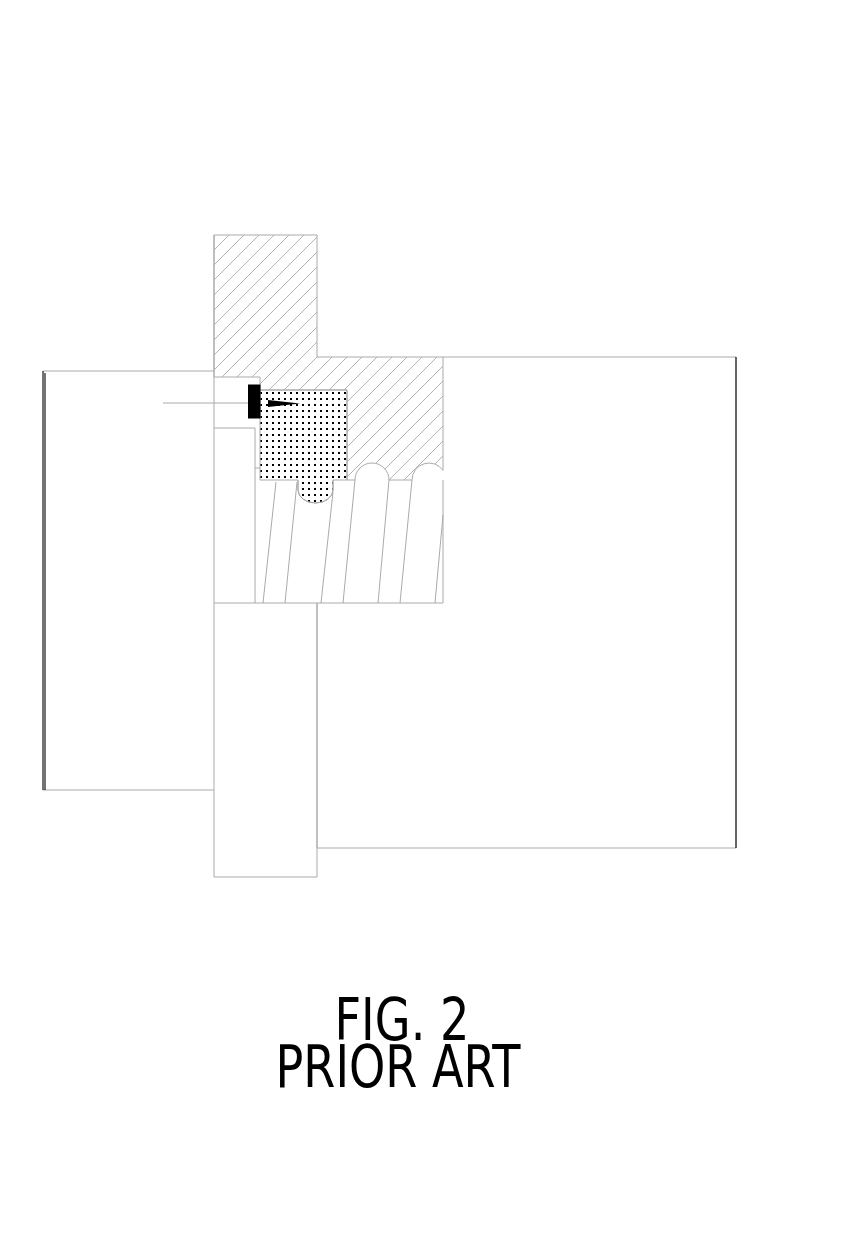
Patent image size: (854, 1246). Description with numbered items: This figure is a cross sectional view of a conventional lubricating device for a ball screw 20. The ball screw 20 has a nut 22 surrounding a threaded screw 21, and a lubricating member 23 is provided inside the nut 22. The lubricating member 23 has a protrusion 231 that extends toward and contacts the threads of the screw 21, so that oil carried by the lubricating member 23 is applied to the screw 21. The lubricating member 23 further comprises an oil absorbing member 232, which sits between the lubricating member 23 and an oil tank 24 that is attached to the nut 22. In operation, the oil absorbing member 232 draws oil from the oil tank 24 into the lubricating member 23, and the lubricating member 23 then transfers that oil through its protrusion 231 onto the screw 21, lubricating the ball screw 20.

The ball screw 20 is at (432, 143).
The screw 21 is at (375, 482).
The nut 22 is at (579, 393).
The lubricating member 23 is at (323, 408).
The protrusion 231 is at (320, 492).
The oil absorbing member 232 is at (248, 395).
The oil tank 24 is at (107, 410).